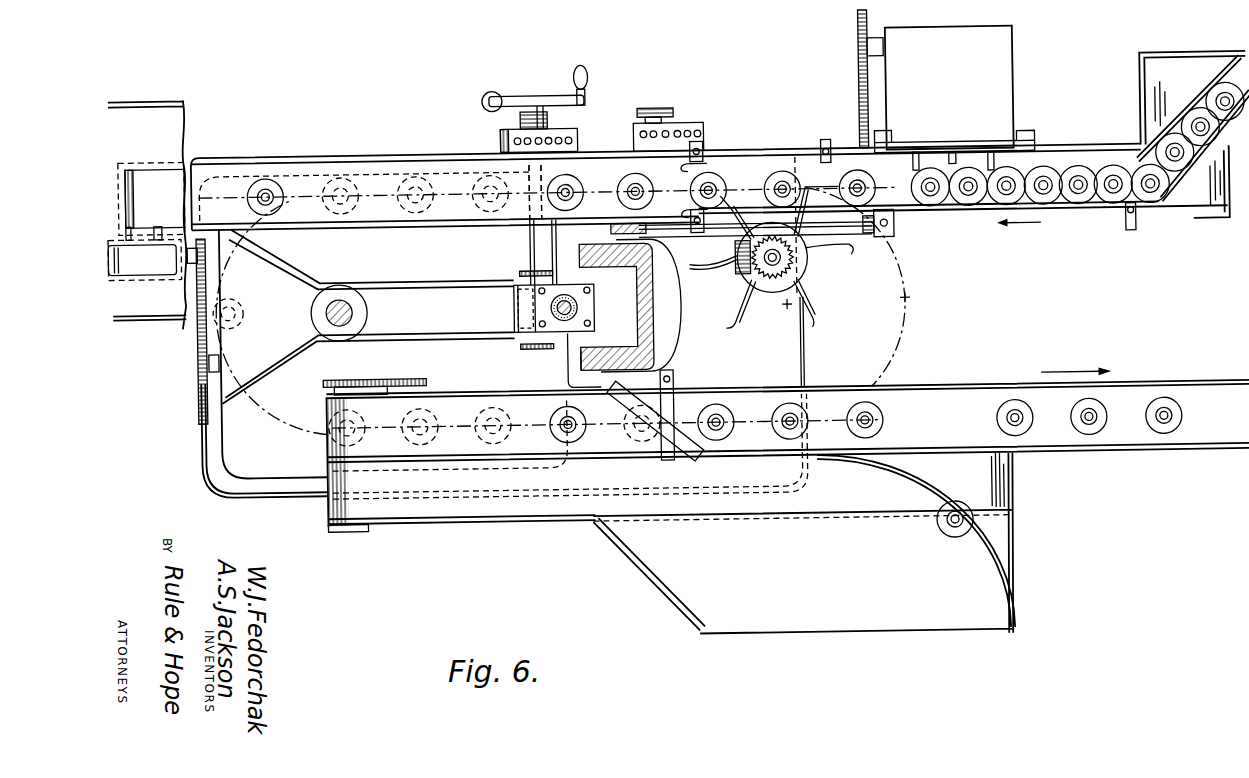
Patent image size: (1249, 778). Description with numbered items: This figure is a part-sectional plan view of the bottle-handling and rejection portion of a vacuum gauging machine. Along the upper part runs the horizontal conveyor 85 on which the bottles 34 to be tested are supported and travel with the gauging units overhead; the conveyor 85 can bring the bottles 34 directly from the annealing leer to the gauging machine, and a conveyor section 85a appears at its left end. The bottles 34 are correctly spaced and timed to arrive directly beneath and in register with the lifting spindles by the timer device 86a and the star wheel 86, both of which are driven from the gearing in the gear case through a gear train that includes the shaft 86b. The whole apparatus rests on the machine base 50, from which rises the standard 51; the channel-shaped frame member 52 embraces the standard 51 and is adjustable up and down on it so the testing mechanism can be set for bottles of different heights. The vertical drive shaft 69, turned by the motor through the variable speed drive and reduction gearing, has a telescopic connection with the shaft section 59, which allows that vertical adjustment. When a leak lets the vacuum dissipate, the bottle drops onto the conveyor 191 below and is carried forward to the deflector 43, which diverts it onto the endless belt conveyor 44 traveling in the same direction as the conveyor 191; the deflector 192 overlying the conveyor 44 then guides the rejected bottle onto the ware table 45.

The horizontal conveyor 85 is at (1190, 212).
The conveyor section 85a is at (176, 137).
The bottle 34 is at (1080, 185).
The timer device 86a is at (1006, 126).
The star wheel 86 is at (808, 265).
The shaft 86b is at (722, 236).
The standard 51 is at (632, 302).
The frame member 52 is at (660, 336).
The shaft section 59 is at (352, 303).
The vertical drive shaft 69 is at (352, 310).
The machine base 50 is at (227, 439).
The deflector 43 is at (669, 454).
The endless belt conveyor 44 is at (582, 508).
The ware table 45 is at (693, 599).
The conveyor 191 is at (981, 388).
The deflector 192 is at (940, 490).